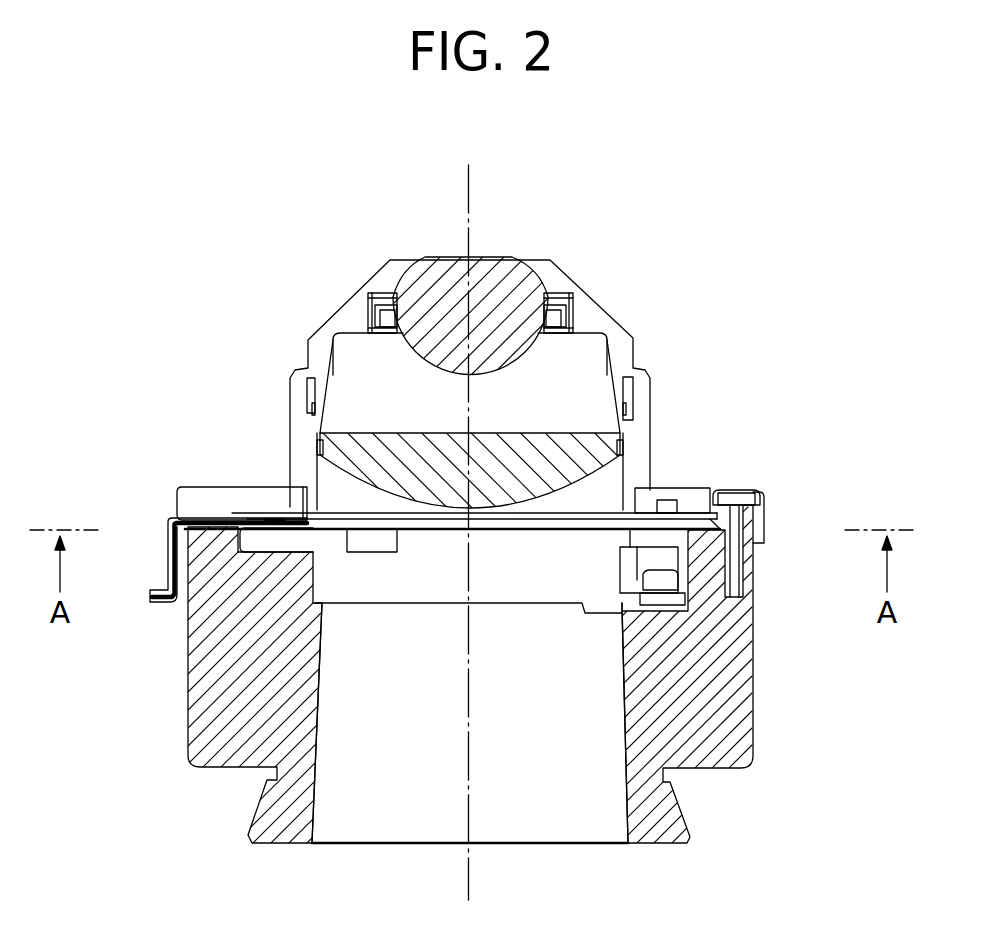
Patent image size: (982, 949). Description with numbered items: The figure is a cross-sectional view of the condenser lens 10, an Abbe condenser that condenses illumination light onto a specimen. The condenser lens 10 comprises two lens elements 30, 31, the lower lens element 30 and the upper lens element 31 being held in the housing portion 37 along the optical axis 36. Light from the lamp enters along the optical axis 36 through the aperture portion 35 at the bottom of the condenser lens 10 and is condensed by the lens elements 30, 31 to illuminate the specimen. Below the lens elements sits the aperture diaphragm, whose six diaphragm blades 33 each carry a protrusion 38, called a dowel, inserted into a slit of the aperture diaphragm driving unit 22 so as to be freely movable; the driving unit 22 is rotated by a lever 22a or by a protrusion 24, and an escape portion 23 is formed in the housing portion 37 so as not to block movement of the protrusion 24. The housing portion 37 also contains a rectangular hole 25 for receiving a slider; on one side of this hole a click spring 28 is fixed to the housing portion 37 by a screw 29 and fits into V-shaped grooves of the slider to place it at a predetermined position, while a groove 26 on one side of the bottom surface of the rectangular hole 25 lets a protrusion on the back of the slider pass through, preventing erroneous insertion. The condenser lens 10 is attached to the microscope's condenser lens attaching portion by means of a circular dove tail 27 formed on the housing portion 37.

The condenser lens 10 is at (748, 474).
The aperture diaphragm driving unit 22 is at (522, 546).
The lever 22a is at (168, 556).
The escape portion 23 is at (272, 548).
The protrusion 24 is at (357, 545).
The rectangular hole 25 is at (417, 585).
The groove 26 is at (567, 635).
The circular dove tail 27 is at (688, 807).
The click spring 28 is at (603, 617).
The screw 29 is at (660, 565).
The lens element 30 is at (535, 443).
The lens element 31 is at (517, 283).
The diaphragm blade 33 is at (250, 512).
The aperture portion 35 is at (583, 803).
The optical axis 36 is at (468, 785).
The housing portion 37 is at (757, 642).
The protrusion 38 is at (277, 519).